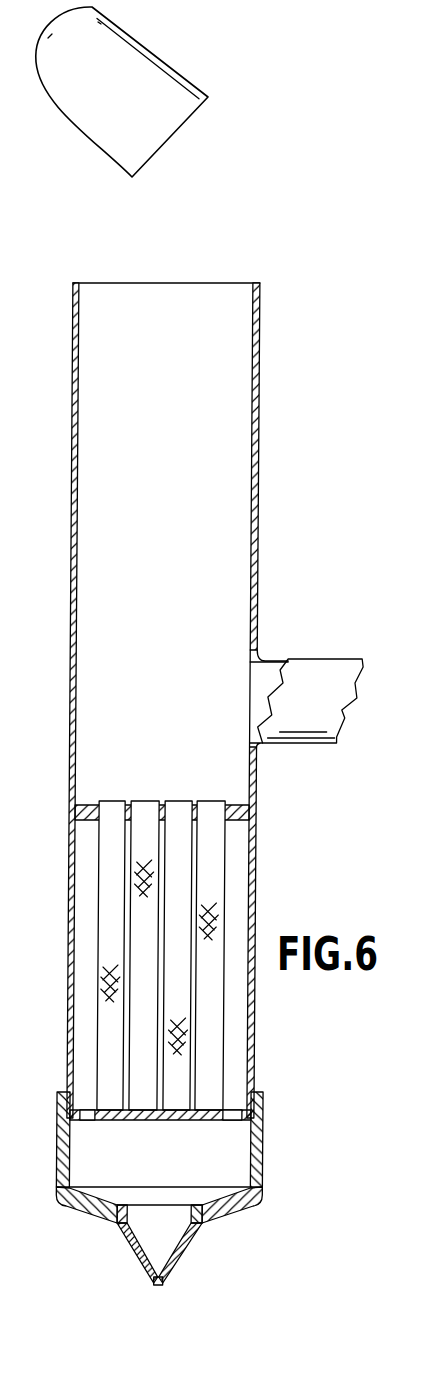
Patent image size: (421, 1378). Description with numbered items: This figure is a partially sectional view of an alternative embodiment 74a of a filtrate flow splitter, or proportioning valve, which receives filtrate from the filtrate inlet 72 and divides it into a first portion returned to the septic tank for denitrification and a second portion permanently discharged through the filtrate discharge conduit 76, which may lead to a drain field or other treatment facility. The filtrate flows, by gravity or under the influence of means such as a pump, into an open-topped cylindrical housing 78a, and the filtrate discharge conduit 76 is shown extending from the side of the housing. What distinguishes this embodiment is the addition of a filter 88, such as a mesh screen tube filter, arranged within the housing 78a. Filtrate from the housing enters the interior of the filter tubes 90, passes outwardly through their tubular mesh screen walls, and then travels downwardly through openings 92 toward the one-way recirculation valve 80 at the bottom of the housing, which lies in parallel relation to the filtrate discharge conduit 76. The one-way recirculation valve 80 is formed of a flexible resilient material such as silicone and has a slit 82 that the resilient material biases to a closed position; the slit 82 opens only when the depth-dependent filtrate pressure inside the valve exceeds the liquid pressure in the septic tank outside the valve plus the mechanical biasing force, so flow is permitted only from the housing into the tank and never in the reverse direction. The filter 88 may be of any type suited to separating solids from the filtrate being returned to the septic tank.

The filtrate inlet 72 is at (173, 60).
The flow splitter embodiment 74a is at (305, 559).
The filtrate discharge conduit 76 is at (335, 658).
The housing 78a is at (298, 388).
The one-way recirculation valve 80 is at (187, 1248).
The slit 82 is at (158, 1287).
The filter 88 is at (165, 787).
The filter tubes 90 is at (115, 800).
The openings 92 is at (88, 1127).